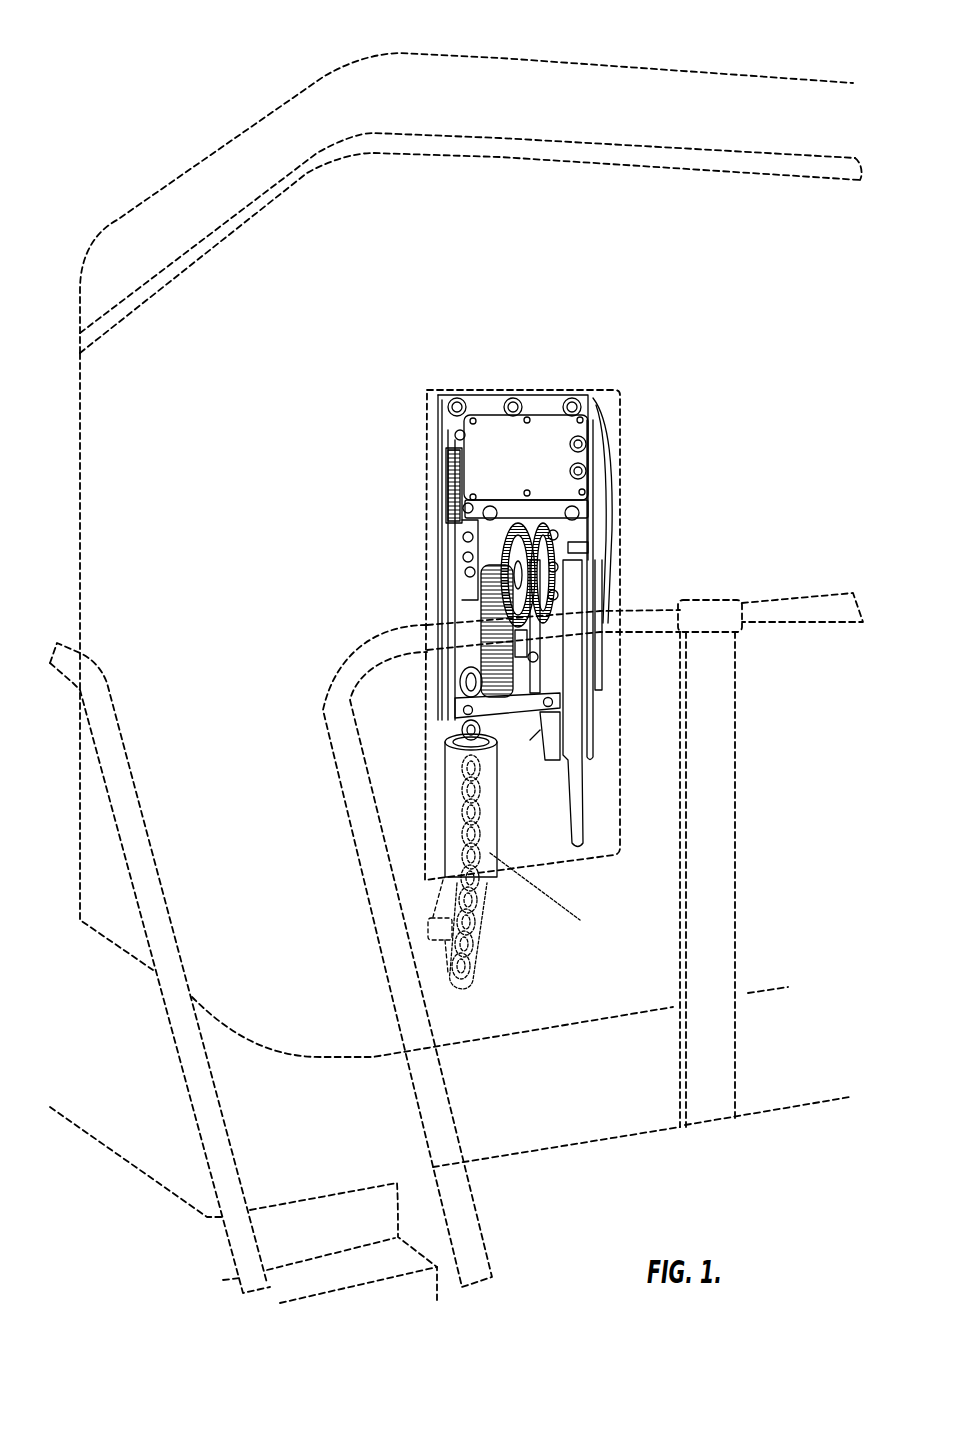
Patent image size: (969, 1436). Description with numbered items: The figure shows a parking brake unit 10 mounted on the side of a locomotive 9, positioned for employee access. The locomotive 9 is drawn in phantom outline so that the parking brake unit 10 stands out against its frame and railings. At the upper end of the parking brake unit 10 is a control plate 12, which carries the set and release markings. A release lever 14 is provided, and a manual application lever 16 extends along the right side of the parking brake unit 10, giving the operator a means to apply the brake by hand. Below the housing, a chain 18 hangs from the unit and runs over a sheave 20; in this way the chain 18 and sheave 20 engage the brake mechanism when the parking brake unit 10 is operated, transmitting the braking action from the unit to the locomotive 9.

The locomotive 9 is at (613, 192).
The parking brake unit 10 is at (627, 428).
The control plate 12 is at (487, 440).
The release lever 14 is at (597, 590).
The manual application lever 16 is at (578, 703).
The chain 18 is at (533, 861).
The sheave 20 is at (440, 950).